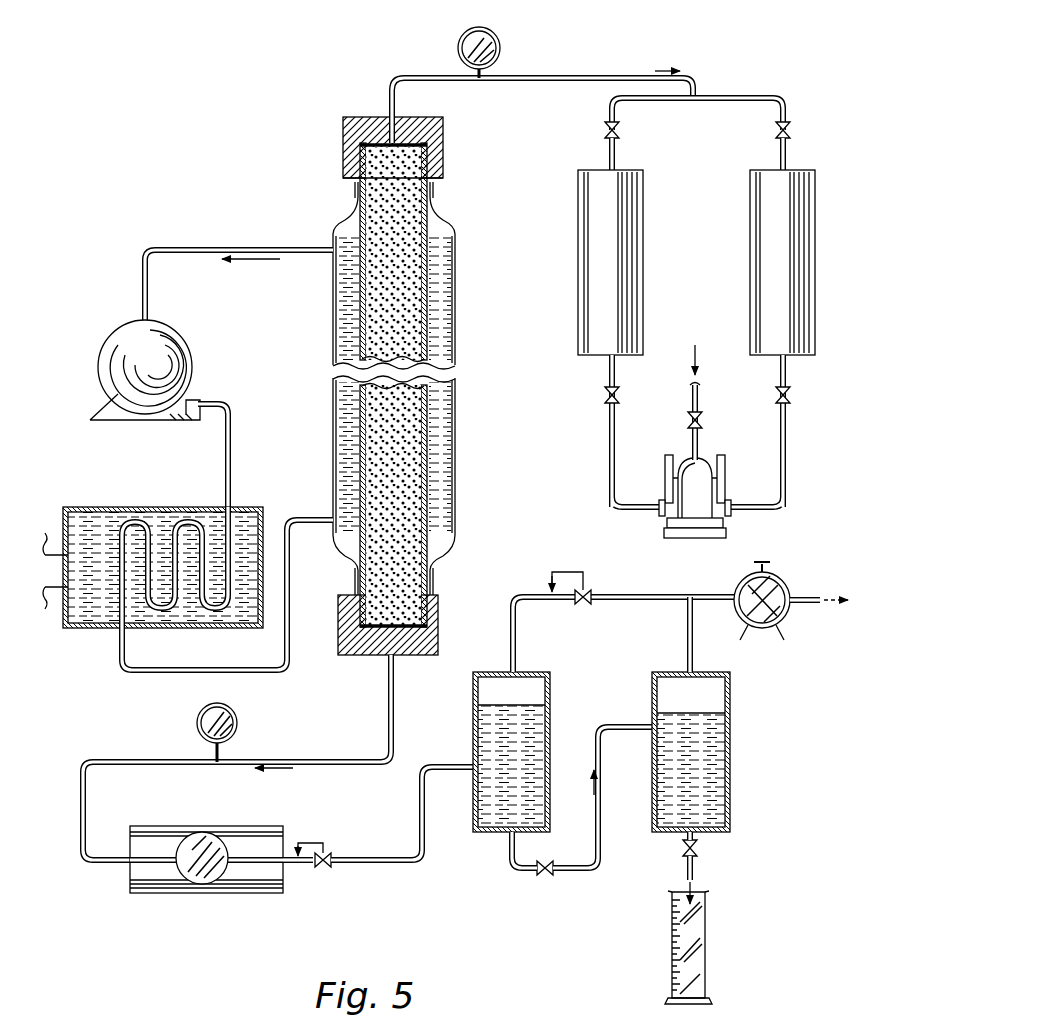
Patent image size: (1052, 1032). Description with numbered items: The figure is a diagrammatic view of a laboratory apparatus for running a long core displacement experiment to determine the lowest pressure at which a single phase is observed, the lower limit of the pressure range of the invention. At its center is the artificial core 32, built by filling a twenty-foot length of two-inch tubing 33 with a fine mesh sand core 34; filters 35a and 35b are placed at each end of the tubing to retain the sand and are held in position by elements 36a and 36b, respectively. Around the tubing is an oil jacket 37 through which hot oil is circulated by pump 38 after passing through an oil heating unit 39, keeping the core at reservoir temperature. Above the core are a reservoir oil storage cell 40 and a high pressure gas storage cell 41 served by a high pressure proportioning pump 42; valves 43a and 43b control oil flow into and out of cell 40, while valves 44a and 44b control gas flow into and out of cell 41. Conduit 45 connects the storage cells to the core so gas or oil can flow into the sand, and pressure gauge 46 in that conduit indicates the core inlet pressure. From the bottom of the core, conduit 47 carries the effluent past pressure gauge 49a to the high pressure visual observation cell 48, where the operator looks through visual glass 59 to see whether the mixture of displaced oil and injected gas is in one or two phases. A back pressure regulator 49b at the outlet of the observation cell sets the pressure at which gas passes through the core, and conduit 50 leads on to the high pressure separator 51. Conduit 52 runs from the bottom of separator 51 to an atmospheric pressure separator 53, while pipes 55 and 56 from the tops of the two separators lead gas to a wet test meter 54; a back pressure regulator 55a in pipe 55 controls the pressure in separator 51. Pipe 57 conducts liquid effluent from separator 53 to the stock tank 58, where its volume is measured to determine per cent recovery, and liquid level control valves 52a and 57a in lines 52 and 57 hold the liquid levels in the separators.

The artificial core 32 is at (460, 430).
The tubing 33 is at (424, 531).
The sand core 34 is at (400, 485).
The filter 35a is at (422, 624).
The filter 35b is at (422, 146).
The retaining element 36a is at (340, 643).
The retaining element 36b is at (435, 130).
The oil jacket 37 is at (457, 394).
The pump 38 is at (190, 350).
The oil heating unit 39 is at (148, 505).
The reservoir oil storage cell 40 is at (640, 262).
The high pressure gas storage cell 41 is at (812, 262).
The high pressure proportioning pump 42 is at (705, 455).
The valve 43a is at (620, 134).
The valve 43b is at (620, 399).
The valve 44a is at (791, 134).
The valve 44b is at (791, 399).
The conduit 45 is at (570, 70).
The pressure gauge 46 is at (492, 32).
The conduit 47 is at (296, 755).
The high pressure visual observation cell 48 is at (160, 893).
The pressure gauge 49a is at (197, 714).
The back pressure regulator 49b is at (318, 866).
The conduit 50 is at (418, 810).
The high pressure separator 51 is at (474, 722).
The conduit 52 is at (552, 876).
The liquid level control valve 52a is at (556, 840).
The atmospheric pressure separator 53 is at (730, 748).
The wet test meter 54 is at (778, 580).
The pipe 55 is at (605, 606).
The back pressure regulator 55a is at (590, 586).
The pipe 56 is at (687, 640).
The pipe 57 is at (696, 862).
The liquid level control valve 57a is at (682, 846).
The stock tank 58 is at (705, 922).
The visual glass 59 is at (196, 880).